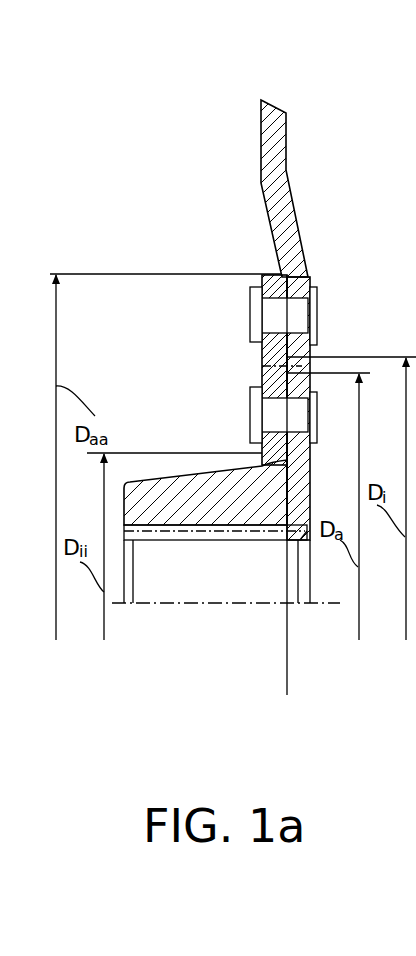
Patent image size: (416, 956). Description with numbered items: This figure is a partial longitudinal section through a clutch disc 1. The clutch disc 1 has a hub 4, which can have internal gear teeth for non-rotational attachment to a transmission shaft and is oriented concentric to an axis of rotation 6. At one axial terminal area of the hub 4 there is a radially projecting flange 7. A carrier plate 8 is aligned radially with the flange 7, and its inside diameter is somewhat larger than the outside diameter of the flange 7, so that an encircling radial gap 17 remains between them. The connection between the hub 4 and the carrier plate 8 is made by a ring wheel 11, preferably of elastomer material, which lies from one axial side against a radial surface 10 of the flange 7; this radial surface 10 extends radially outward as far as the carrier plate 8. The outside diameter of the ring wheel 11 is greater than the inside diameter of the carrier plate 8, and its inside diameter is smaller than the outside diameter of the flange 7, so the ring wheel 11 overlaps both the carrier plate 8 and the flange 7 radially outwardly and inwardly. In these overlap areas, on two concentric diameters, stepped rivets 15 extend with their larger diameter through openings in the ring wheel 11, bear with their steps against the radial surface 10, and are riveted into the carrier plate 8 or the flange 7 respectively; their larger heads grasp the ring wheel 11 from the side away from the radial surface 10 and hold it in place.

The clutch disc 1 is at (178, 142).
The hub 4 is at (170, 490).
The axis of rotation 6 is at (205, 603).
The flange 7 is at (303, 387).
The carrier plate 8 is at (282, 183).
The radial surface 10 is at (286, 643).
The ring wheel 11 is at (260, 273).
The stepped rivets 15 is at (268, 318).
The radial gap 17 is at (290, 368).